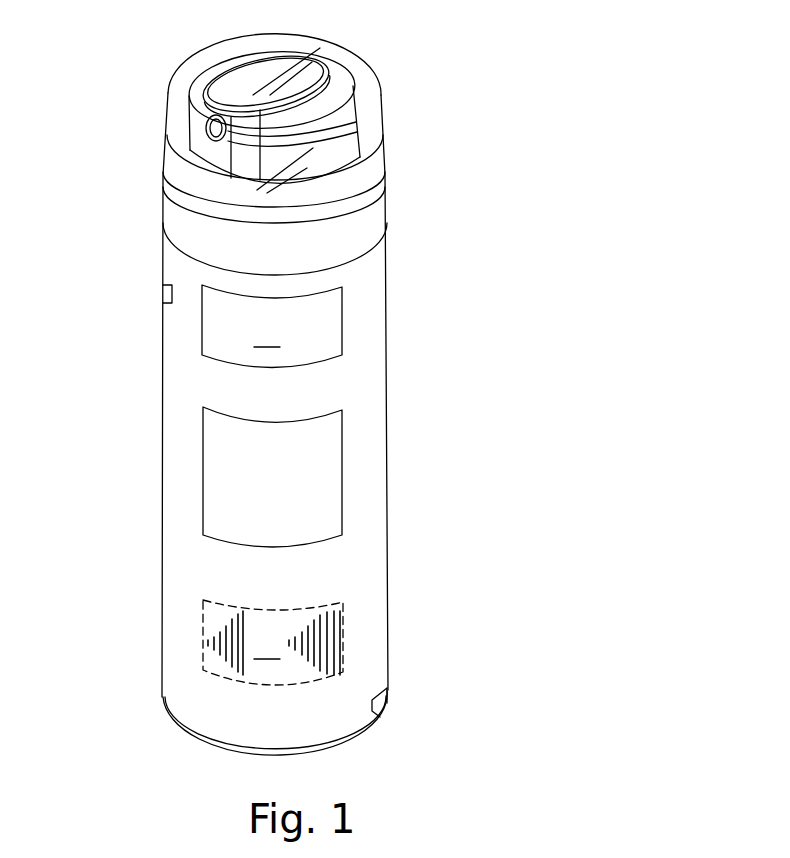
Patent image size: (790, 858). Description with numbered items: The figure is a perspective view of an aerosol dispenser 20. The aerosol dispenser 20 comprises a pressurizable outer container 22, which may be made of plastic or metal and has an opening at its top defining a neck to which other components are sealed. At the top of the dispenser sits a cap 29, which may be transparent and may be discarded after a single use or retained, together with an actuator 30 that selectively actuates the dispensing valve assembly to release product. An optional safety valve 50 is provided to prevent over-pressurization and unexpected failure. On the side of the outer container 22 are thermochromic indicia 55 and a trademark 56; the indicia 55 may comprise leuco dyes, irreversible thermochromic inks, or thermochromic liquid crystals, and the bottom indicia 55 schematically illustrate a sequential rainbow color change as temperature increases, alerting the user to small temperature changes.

The aerosol dispenser 20 is at (433, 333).
The pressurizable outer container 22 is at (357, 545).
The cap 29 is at (356, 80).
The actuator 30 is at (292, 150).
The safety valve 50 is at (162, 297).
The thermochromic indicia 55 is at (163, 190).
The trademark 56 is at (254, 510).